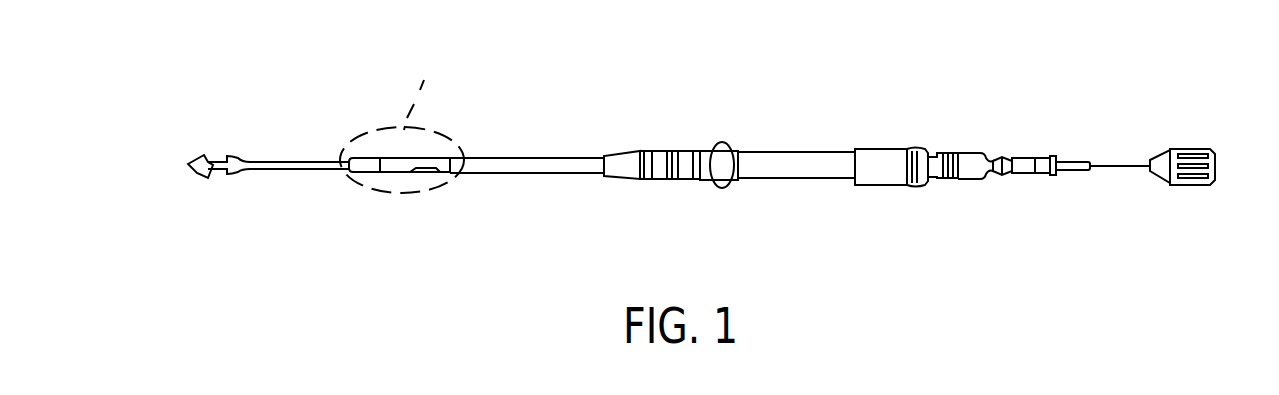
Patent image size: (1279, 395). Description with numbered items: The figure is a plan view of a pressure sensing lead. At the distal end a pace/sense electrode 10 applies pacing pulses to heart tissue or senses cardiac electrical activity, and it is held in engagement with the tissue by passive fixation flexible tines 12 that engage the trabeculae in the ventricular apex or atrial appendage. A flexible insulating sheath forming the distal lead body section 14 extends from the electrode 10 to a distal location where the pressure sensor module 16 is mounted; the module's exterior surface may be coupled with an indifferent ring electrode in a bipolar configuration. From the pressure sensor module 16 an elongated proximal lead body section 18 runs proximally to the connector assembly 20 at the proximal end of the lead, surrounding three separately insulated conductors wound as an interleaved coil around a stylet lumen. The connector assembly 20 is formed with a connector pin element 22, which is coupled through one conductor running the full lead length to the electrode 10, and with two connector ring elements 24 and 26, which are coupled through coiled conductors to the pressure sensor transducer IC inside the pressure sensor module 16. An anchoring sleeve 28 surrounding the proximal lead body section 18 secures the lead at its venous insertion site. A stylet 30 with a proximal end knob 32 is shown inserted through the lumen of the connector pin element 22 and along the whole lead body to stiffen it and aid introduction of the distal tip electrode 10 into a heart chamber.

The pace/sense electrode 10 is at (196, 161).
The flexible tines 12 is at (208, 160).
The distal lead body section 14 is at (268, 164).
The pressure sensor module 16 is at (427, 181).
The proximal lead body section 18 is at (535, 160).
The connector assembly 20 is at (903, 124).
The connector pin element 22 is at (1073, 162).
The connector ring element 24 is at (1027, 164).
The connector ring element 26 is at (975, 162).
The anchoring sleeve 28 is at (683, 181).
The stylet 30 is at (1135, 163).
The proximal end knob 32 is at (1200, 148).